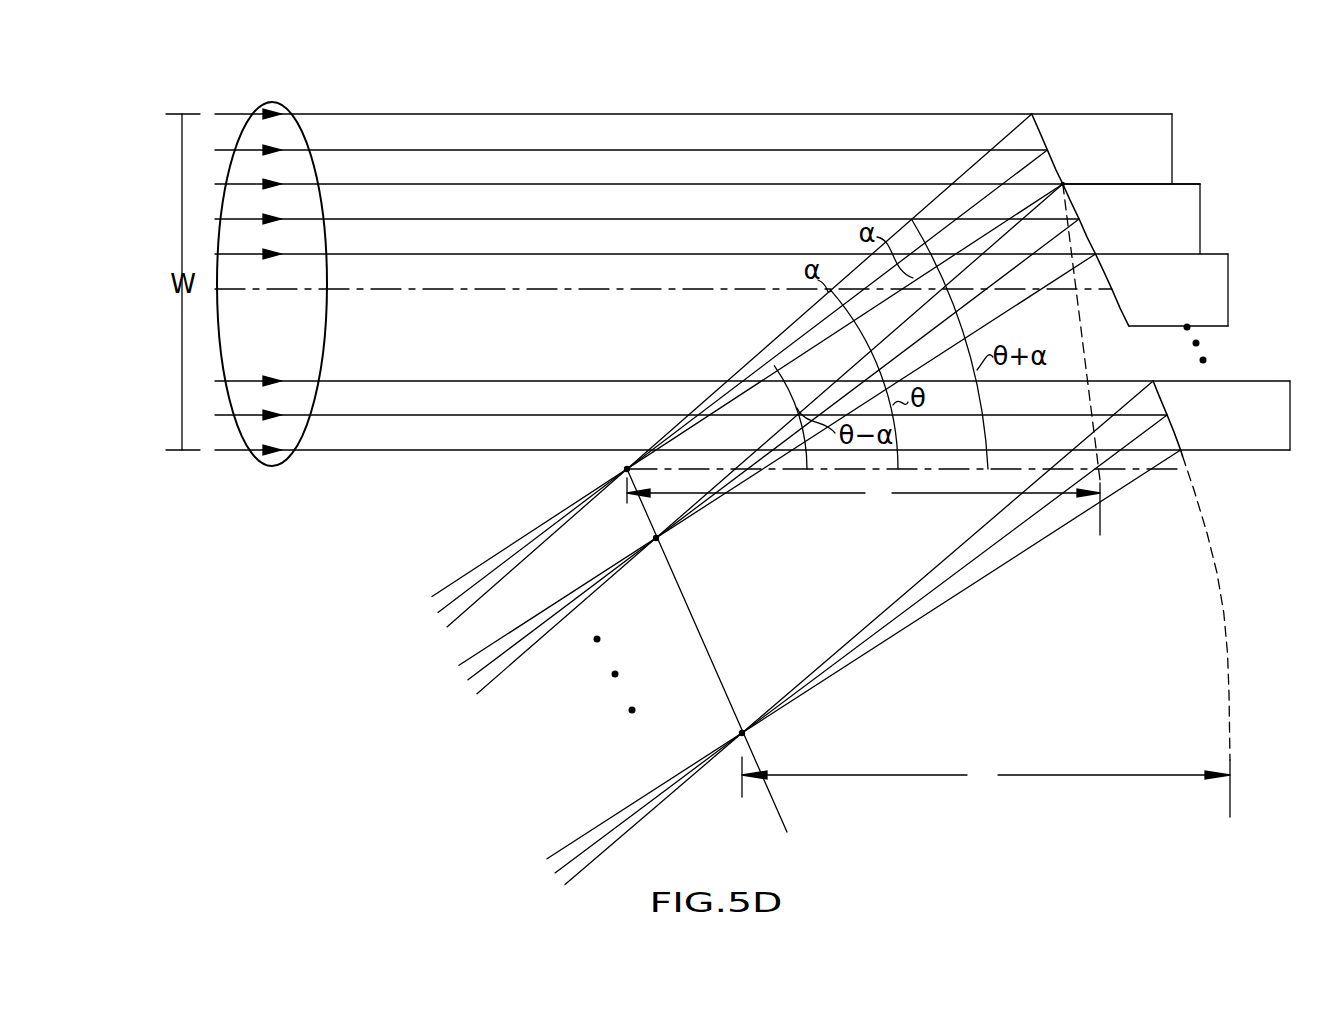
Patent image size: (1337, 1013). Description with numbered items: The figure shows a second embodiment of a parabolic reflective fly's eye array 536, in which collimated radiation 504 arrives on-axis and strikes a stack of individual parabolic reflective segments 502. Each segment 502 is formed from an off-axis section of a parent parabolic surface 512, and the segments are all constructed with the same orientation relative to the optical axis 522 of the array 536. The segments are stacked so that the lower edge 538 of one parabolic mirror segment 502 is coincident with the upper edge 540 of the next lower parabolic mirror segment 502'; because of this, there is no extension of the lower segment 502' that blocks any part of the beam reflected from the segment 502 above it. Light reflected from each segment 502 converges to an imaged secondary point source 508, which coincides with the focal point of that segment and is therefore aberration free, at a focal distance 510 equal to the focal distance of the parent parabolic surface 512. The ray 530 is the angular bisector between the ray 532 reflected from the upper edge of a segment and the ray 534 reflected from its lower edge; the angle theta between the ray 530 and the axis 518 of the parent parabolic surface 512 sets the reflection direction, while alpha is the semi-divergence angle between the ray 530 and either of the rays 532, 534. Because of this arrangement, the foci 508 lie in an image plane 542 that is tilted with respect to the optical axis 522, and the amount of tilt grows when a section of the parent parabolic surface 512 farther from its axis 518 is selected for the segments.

The parabolic reflective segment 502 is at (1109, 117).
The lower parabolic mirror segment 502' is at (1172, 215).
The collimated radiation 504 is at (279, 102).
The imaged secondary point source 508 is at (625, 470).
The focal distance 510 is at (820, 493).
The parent parabolic surface 512 is at (1088, 328).
The axis of the parent parabolic surface 518 is at (913, 470).
The optical axis 522 is at (375, 291).
The bisector ray 530 is at (778, 357).
The upper edge reflected ray 532 is at (733, 377).
The lower edge reflected ray 534 is at (795, 322).
The parabolic reflective fly's eye array 536 is at (1253, 85).
The lower edge of parabolic mirror segment 538 is at (1063, 184).
The upper edge of parabolic mirror segment 540 is at (1068, 186).
The image plane 542 is at (683, 595).